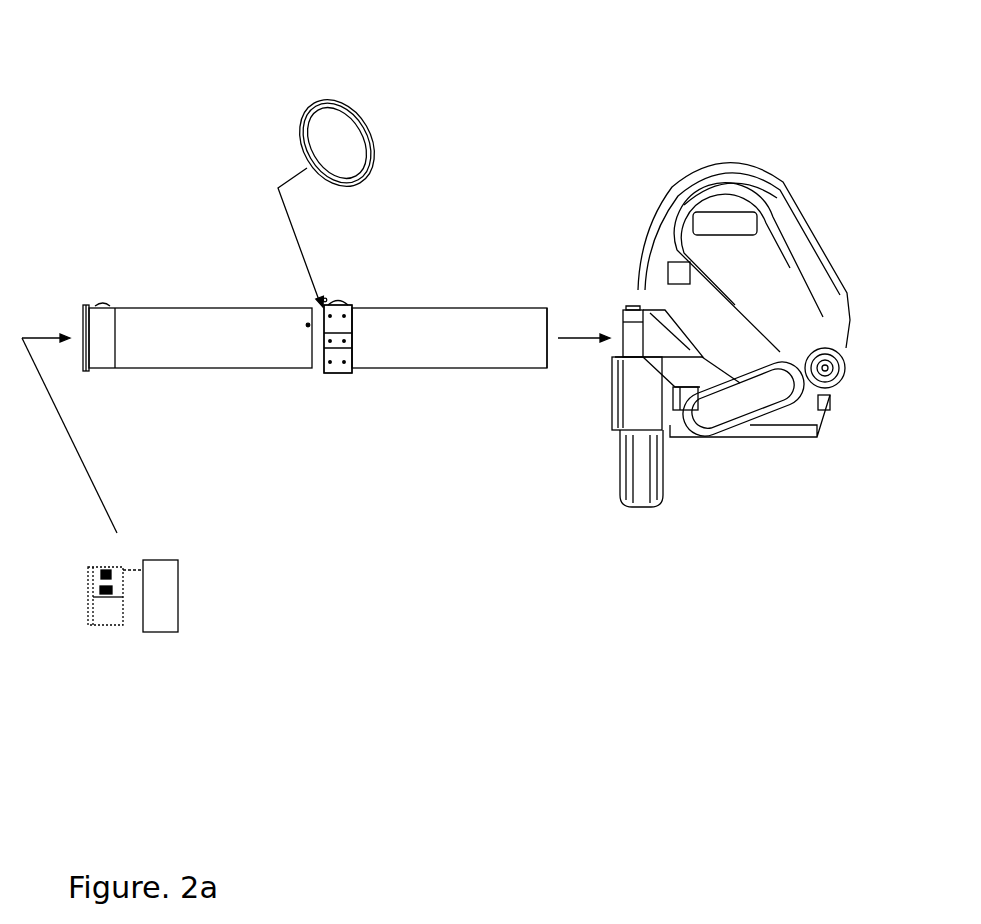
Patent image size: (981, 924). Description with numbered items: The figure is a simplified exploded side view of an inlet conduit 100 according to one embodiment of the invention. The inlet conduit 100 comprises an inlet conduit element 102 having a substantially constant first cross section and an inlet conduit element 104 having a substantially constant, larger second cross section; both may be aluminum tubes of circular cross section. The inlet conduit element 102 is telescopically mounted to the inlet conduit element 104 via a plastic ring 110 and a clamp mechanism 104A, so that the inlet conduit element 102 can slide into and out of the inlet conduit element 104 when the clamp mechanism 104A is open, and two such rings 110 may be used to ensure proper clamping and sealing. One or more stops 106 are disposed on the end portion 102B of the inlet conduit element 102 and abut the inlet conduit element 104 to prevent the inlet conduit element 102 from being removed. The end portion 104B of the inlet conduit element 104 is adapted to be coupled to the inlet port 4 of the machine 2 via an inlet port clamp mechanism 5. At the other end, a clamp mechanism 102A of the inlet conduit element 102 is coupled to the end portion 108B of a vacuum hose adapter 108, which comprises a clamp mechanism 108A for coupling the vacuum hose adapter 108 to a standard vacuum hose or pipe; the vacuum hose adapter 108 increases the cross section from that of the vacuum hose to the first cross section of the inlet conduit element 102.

The inlet conduit 100 is at (424, 90).
The machine 2 is at (670, 257).
The inlet port 4 is at (620, 320).
The inlet port clamp mechanism 5 is at (635, 306).
The inlet conduit element 102 is at (187, 350).
The clamp mechanism 102A is at (97, 335).
The end portion 102B is at (336, 352).
The inlet conduit element 104 is at (440, 350).
The clamp mechanism 104A is at (332, 330).
The end portion 104B is at (547, 368).
The stop 106 is at (308, 325).
The vacuum hose adapter 108 is at (135, 603).
The clamp mechanism 108A is at (108, 613).
The end portion 108B is at (167, 595).
The plastic ring 110 is at (302, 130).